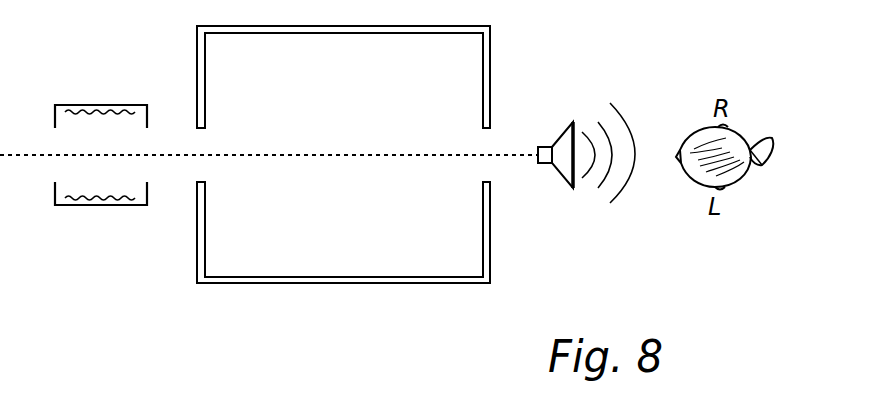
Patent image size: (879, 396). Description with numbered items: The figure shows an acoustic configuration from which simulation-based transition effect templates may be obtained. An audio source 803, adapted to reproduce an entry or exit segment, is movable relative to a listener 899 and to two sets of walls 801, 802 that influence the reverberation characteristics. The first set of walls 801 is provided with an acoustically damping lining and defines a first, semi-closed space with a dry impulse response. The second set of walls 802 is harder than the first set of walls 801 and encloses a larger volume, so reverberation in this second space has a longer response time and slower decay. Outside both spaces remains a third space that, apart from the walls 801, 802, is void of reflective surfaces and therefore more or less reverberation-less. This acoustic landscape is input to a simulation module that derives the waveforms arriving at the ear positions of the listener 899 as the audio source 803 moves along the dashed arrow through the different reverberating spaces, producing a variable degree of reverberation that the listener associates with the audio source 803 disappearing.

The first set of walls 801 is at (92, 205).
The second set of walls 802 is at (347, 283).
The audio source 803 is at (567, 187).
The listener 899 is at (702, 132).